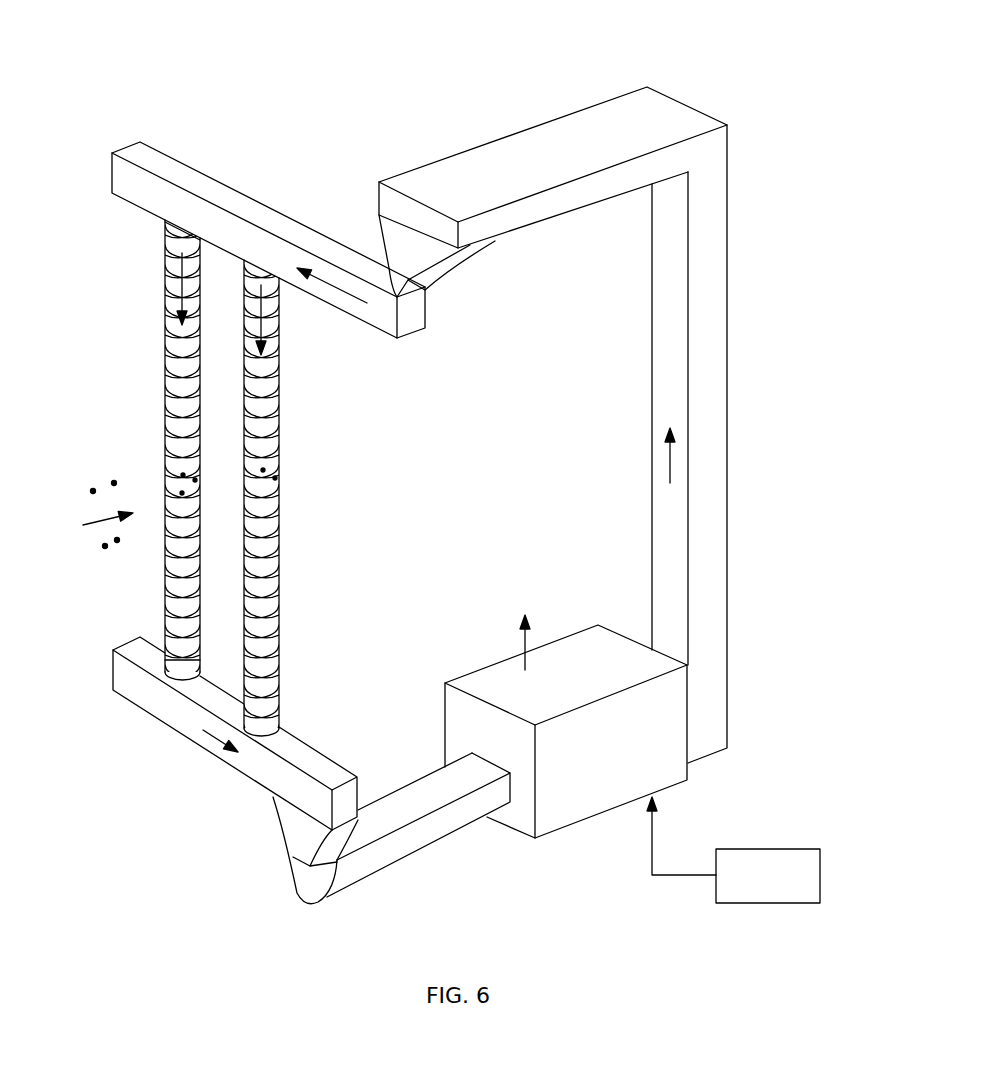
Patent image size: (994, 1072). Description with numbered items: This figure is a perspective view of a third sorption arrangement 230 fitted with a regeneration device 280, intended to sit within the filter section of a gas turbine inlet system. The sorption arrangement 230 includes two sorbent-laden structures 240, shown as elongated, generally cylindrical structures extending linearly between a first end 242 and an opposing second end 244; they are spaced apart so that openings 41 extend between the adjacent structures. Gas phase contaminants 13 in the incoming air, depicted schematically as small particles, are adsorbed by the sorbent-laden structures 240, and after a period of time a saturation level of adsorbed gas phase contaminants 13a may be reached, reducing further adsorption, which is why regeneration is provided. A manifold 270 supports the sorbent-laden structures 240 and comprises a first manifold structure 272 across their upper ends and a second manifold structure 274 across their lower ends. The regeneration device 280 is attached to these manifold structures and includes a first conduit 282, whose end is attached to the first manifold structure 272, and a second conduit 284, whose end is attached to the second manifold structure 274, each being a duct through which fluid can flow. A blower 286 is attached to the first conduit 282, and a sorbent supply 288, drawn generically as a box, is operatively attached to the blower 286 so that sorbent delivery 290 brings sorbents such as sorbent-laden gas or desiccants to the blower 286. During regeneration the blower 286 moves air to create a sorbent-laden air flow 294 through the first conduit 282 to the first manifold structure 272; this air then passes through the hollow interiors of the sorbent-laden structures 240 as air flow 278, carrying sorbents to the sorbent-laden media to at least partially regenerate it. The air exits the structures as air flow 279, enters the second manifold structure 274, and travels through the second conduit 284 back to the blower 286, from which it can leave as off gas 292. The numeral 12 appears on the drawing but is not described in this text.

The material flow 12 is at (93, 527).
The gas phase contaminants 13 is at (93, 491).
The adsorbed gas phase contaminants 13a is at (180, 473).
The openings 41 is at (206, 598).
The third sorption arrangement 230 is at (204, 68).
The sorbent-laden structures 240 is at (165, 355).
The first end 242 is at (163, 229).
The second end 244 is at (143, 643).
The manifold 270 is at (458, 364).
The first manifold structure 272 is at (232, 190).
The second manifold structure 274 is at (148, 715).
The air flow 278 is at (172, 284).
The air flow 279 is at (210, 750).
The regeneration device 280 is at (742, 76).
The first conduit 282 is at (728, 335).
The second conduit 284 is at (418, 853).
The blower 286 is at (586, 623).
The sorbent supply 288 is at (760, 903).
The sorbent delivery 290 is at (655, 835).
The off gas 292 is at (520, 636).
The sorbent-laden air flow 294 is at (328, 277).